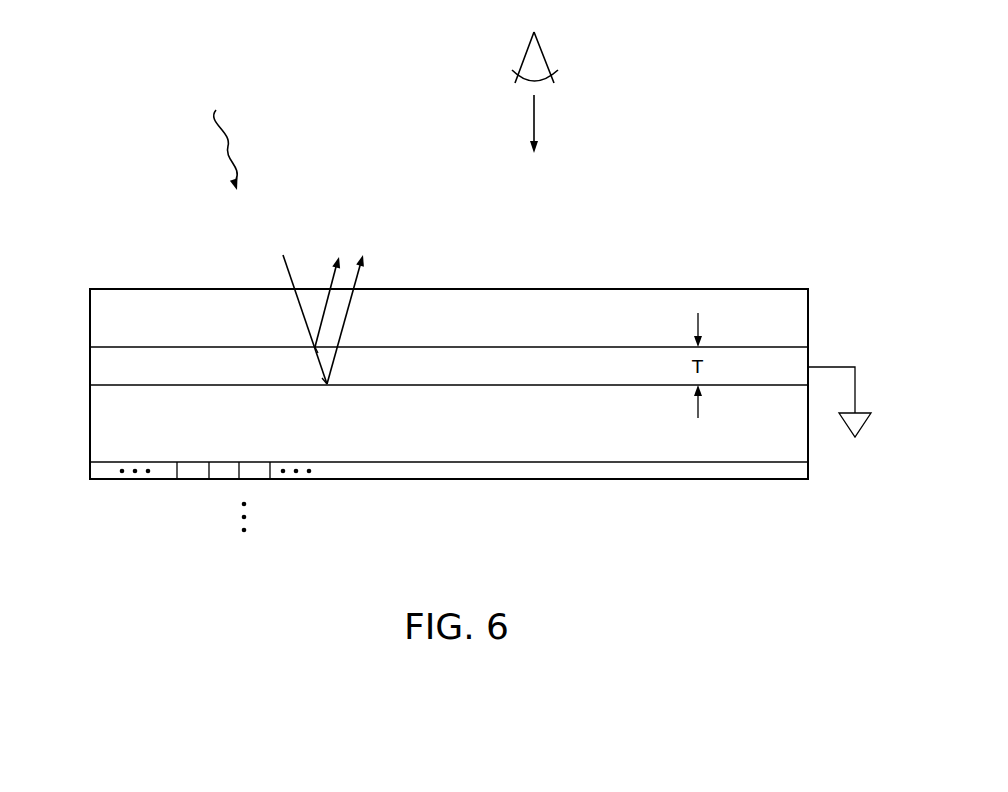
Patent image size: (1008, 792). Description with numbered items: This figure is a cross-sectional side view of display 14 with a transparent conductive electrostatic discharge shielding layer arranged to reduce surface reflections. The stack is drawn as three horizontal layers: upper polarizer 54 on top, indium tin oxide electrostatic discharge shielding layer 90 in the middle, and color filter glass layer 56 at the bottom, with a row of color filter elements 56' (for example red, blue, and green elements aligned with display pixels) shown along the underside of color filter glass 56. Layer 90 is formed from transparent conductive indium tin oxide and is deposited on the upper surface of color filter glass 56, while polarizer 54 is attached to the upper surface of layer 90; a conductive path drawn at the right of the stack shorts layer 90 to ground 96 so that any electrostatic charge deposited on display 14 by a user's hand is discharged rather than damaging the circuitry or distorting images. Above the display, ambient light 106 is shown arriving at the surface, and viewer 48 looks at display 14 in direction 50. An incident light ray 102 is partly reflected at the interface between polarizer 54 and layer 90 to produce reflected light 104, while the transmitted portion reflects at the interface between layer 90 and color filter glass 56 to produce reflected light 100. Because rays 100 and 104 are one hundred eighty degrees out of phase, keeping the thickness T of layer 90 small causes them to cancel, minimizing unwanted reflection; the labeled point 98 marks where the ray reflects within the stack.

The display 14 is at (732, 168).
The viewer 48 is at (543, 53).
The direction 50 is at (535, 125).
The upper polarizer 54 is at (90, 319).
The electrostatic discharge shielding layer 90 is at (90, 367).
The color filter glass layer 56 is at (432, 463).
The color filter elements 56' is at (223, 448).
The reflection point 98 is at (325, 378).
The reflected light 100 is at (358, 281).
The light ray 102 is at (290, 279).
The reflected light 104 is at (332, 282).
The ambient light 106 is at (232, 150).
The ground 96 is at (861, 428).